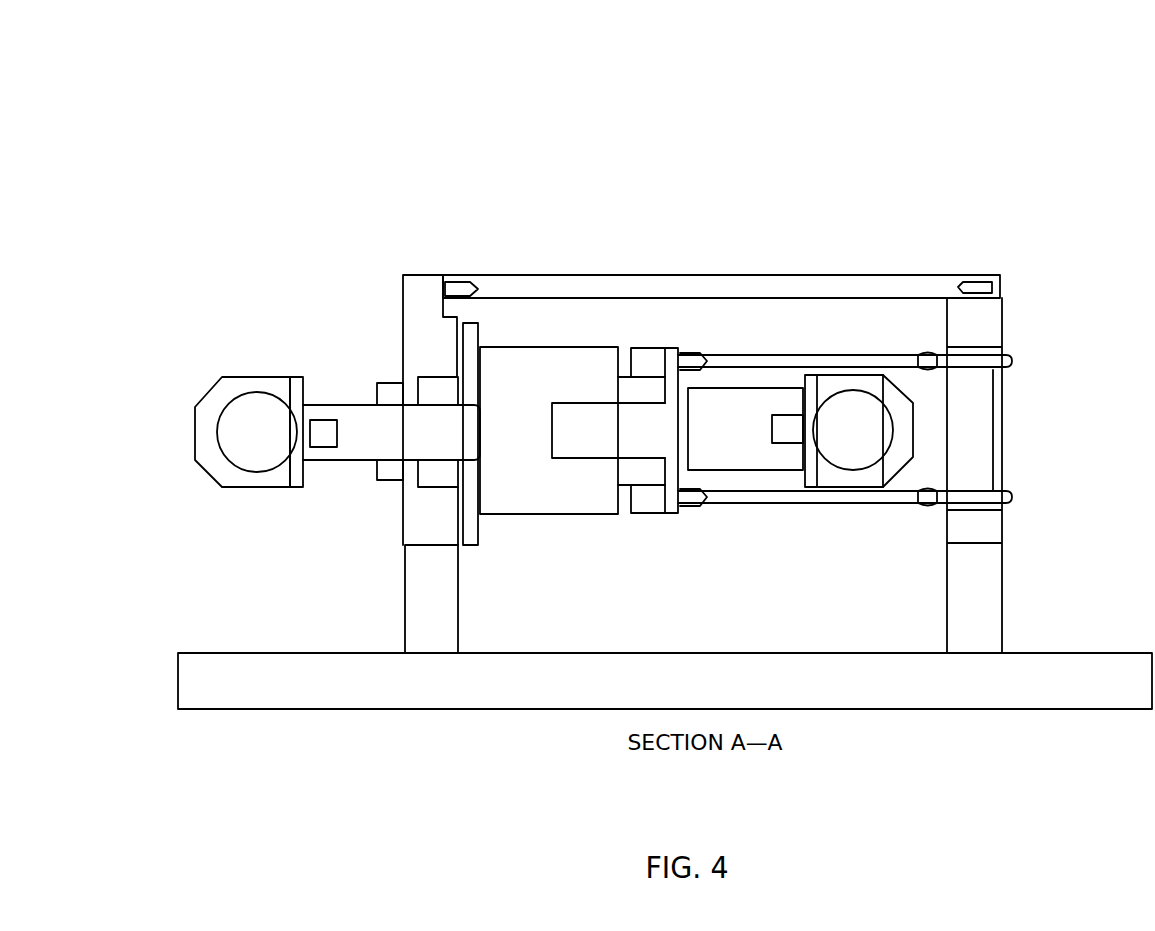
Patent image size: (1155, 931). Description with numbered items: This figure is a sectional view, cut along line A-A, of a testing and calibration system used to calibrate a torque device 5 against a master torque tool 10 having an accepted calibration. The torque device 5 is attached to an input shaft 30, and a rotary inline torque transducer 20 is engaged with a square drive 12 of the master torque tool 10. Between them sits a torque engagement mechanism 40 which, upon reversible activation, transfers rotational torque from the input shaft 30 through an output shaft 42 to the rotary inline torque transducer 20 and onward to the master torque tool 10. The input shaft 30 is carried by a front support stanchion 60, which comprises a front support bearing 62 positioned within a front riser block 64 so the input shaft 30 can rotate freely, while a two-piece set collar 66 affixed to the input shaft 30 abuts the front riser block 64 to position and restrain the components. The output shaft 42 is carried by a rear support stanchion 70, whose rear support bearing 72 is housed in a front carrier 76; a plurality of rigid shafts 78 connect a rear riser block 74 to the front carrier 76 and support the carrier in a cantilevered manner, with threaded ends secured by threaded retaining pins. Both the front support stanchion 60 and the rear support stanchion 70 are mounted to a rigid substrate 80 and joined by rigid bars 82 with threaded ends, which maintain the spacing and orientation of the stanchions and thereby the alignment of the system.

The torque device 5 is at (235, 370).
The master torque tool 10 is at (855, 487).
The square drive 12 is at (325, 435).
The rotary inline torque transducer 20 is at (700, 473).
The input shaft 30 is at (357, 420).
The torque engagement mechanism 40 is at (519, 342).
The output shaft 42 is at (643, 418).
The front support stanchion 60 is at (432, 262).
The front support bearing 62 is at (443, 370).
The front riser block 64 is at (430, 515).
The two-piece set collar 66 is at (385, 382).
The rear support stanchion 70 is at (1013, 302).
The rear support bearing 72 is at (632, 368).
The rear riser block 74 is at (983, 322).
The front carrier 76 is at (657, 500).
The rigid shafts 78 is at (823, 360).
The rigid substrate 80 is at (303, 692).
The rigid bars 82 is at (903, 292).